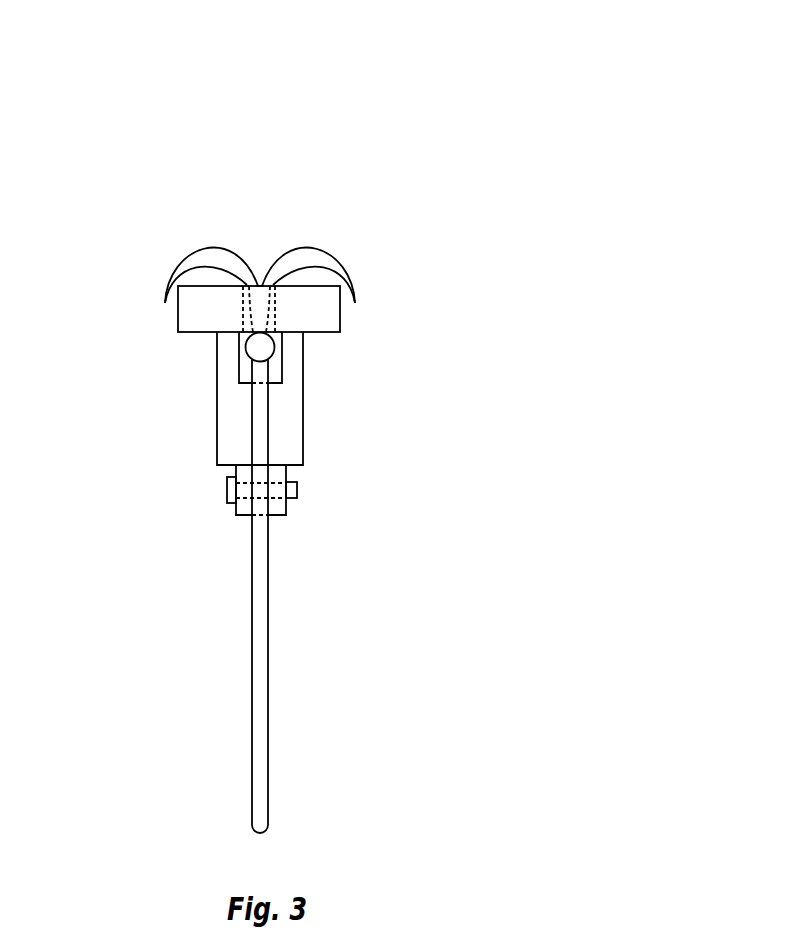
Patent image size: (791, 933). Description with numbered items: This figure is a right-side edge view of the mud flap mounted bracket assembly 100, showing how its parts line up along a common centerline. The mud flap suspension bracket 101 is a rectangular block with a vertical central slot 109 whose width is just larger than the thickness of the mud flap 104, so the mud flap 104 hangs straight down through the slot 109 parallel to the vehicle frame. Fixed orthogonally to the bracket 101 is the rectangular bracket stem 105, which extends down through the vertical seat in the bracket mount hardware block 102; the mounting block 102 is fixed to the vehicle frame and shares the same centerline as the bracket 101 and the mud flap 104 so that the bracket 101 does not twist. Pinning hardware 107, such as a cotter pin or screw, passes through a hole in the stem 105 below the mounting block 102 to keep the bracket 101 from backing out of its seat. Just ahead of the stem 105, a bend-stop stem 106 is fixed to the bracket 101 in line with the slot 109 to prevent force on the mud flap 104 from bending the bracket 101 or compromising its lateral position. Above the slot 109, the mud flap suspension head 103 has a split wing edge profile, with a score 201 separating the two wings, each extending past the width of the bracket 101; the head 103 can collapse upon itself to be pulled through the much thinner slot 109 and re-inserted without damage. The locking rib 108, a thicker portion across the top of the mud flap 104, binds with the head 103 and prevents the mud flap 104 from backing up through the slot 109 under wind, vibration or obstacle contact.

The mud flap mounted bracket assembly 100 is at (267, 114).
The mud flap suspension bracket 101 is at (203, 333).
The bracket mount hardware block 102 is at (303, 408).
The mud flap suspension head 103 is at (340, 257).
The mud flap 104 is at (252, 662).
The bracket stem 105 is at (286, 508).
The bend-stop stem 106 is at (238, 360).
The pinning hardware 107 is at (228, 490).
The locking rib 108 is at (275, 345).
The central slot 109 is at (243, 305).
The score 201 is at (258, 286).